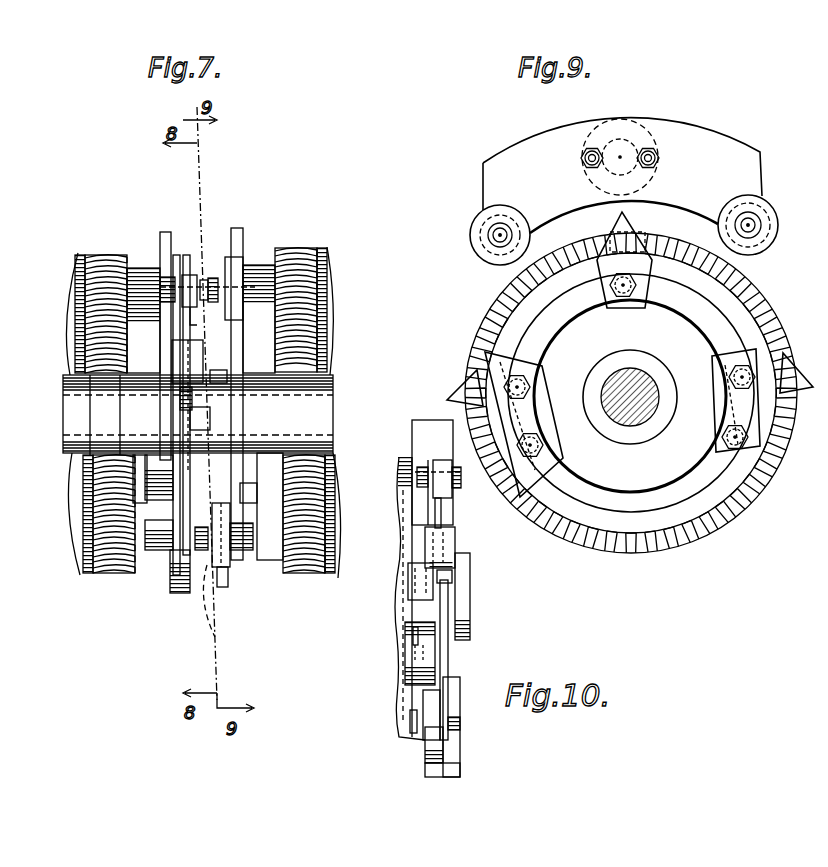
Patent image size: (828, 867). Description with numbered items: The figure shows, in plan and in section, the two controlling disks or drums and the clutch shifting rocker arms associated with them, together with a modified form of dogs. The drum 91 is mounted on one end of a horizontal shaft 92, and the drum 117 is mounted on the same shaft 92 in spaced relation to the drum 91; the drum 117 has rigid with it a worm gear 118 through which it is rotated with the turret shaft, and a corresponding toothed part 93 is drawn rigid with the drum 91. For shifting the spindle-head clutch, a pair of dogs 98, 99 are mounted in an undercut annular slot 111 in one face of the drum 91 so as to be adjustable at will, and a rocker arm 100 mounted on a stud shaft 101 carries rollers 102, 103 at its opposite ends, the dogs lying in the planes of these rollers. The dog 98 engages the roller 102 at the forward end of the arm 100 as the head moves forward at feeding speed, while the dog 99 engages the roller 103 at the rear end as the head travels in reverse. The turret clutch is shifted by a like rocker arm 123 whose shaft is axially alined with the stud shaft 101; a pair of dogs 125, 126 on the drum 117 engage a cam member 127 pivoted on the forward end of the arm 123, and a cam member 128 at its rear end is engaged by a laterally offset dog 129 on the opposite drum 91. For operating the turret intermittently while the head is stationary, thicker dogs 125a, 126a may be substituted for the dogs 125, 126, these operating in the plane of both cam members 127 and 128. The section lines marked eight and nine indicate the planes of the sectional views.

In FIG. 7, the drum 91 is at (273, 551).
In FIG. 9, the drum 91 is at (630, 396).
In FIG. 7, the shaft 92 is at (110, 433).
In FIG. 9, the shaft 92 is at (640, 386).
In FIG. 10, the shaft 92 is at (406, 611).
In FIG. 7, the gear 93 is at (310, 557).
In FIG. 9, the gear 93 is at (610, 558).
In FIG. 7, the dog 98 is at (224, 566).
In FIG. 9, the dog 98 is at (795, 380).
In FIG. 7, the dog 99 is at (242, 241).
In FIG. 9, the dog 99 is at (495, 424).
In FIG. 7, the rocker arm 100 is at (231, 492).
In FIG. 9, the rocker arm 100 is at (738, 152).
In FIG. 7, the stud shaft 101 is at (297, 405).
In FIG. 9, the stud shaft 101 is at (624, 152).
In FIG. 7, the roller 102 is at (210, 565).
In FIG. 9, the roller 102 is at (770, 240).
In FIG. 7, the roller 103 is at (237, 268).
In FIG. 9, the roller 103 is at (478, 250).
In FIG. 9, the undercut annular slot 111 is at (570, 490).
In FIG. 7, the drum 117 is at (98, 560).
In FIG. 10, the drum 117 is at (405, 675).
In FIG. 7, the worm gear 118 is at (93, 268).
In FIG. 7, the rocker arm 123 is at (153, 518).
In FIG. 10, the rocker arm 123 is at (448, 664).
In FIG. 7, the dog 125 is at (172, 573).
In FIG. 10, the thicker dog 125a is at (460, 745).
In FIG. 7, the dog 126 is at (160, 240).
In FIG. 10, the thicker dog 126a is at (414, 434).
In FIG. 7, the cam member 127 is at (160, 573).
In FIG. 10, the cam member 127 is at (430, 738).
In FIG. 7, the cam member 128 is at (190, 275).
In FIG. 10, the cam member 128 is at (450, 486).
In FIG. 7, the dog 129 is at (218, 405).
In FIG. 9, the dog 129 is at (608, 298).
In FIG. 10, the dog 129 is at (456, 596).